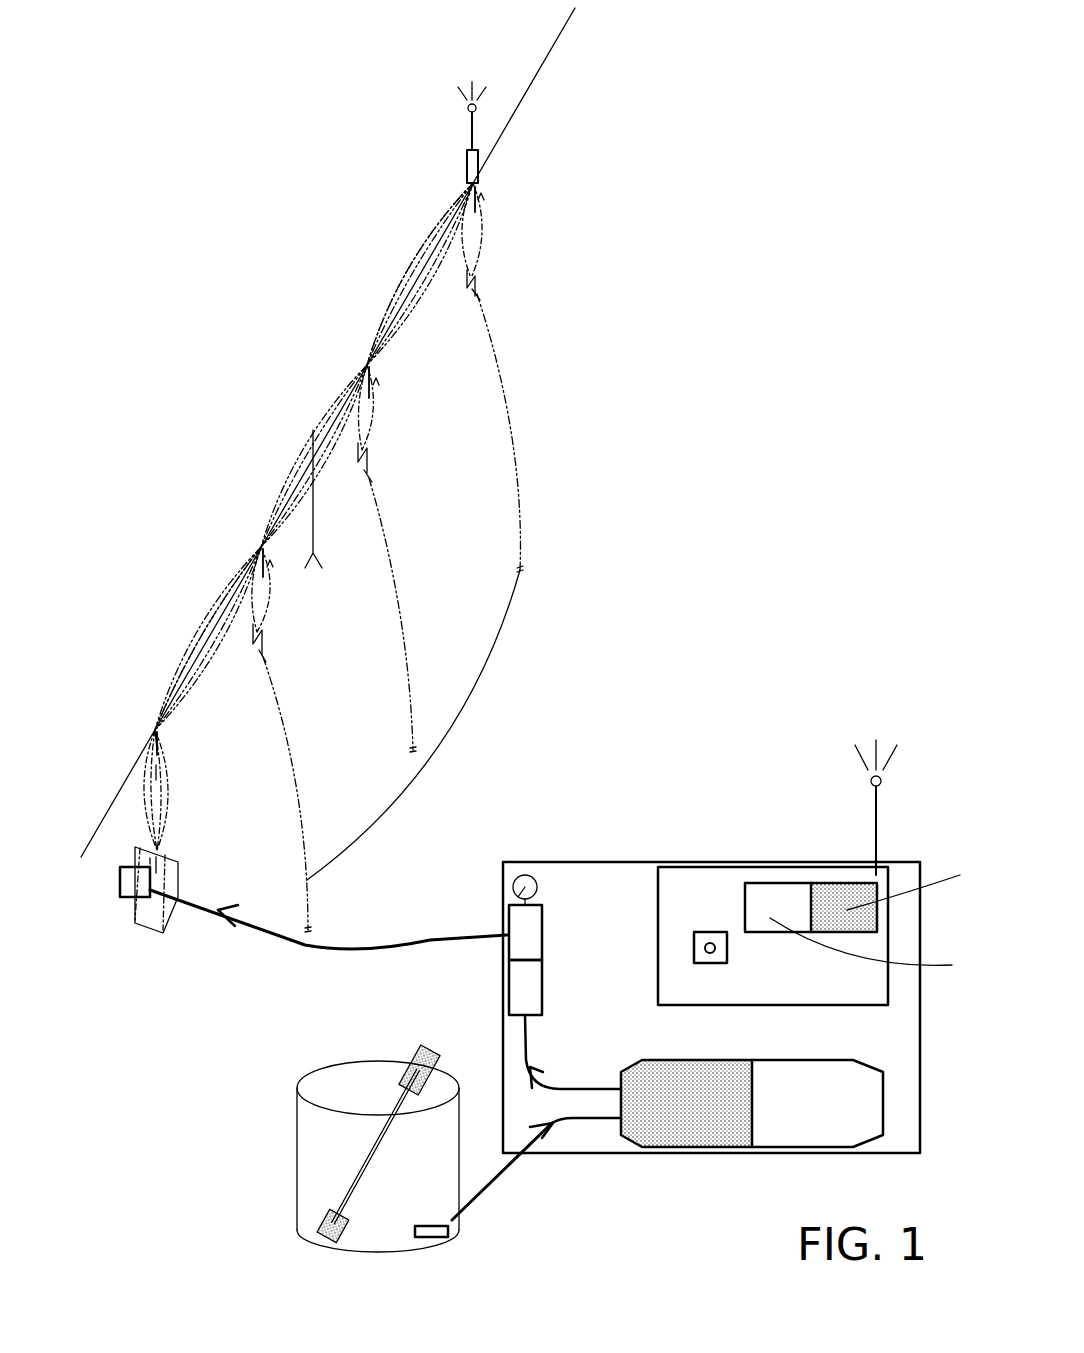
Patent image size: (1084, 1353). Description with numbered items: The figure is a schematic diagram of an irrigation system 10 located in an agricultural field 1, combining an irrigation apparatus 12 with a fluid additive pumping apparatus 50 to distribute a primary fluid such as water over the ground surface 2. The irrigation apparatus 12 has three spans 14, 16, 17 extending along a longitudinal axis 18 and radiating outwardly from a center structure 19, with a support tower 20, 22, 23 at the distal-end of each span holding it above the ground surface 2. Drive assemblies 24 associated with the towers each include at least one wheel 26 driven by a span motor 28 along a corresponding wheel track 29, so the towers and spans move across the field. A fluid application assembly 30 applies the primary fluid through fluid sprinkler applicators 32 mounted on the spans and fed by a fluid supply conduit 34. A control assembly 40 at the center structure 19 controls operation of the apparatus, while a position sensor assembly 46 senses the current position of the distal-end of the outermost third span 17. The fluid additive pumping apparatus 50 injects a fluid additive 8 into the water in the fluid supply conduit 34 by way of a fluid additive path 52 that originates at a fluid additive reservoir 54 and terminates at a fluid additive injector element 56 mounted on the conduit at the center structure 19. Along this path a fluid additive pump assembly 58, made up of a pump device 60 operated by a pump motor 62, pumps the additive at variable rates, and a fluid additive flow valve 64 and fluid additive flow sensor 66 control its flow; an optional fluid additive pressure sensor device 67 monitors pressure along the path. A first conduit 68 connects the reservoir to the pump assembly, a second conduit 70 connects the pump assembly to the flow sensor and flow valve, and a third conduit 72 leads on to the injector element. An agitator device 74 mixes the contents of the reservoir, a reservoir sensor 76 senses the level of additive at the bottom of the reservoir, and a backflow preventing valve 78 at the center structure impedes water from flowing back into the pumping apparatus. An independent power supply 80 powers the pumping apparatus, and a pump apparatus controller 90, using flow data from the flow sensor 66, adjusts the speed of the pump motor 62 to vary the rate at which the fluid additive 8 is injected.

The field 1 is at (635, 683).
The ground surface 2 is at (575, 420).
The fluid additive 8 is at (385, 1238).
The irrigation system 10 is at (557, 358).
The irrigation apparatus 12 is at (248, 357).
The span 14 is at (192, 653).
The span 16 is at (310, 453).
The outermost third span 17 is at (418, 272).
The longitudinal axis 18 is at (543, 62).
The center structure 19 is at (155, 733).
The support tower 20 is at (303, 599).
The support tower 22 is at (372, 426).
The support tower 23 is at (478, 246).
The drive assembly 24 is at (468, 283).
The wheel 26 is at (477, 291).
The span motor 28 is at (253, 630).
The wheel track 29 is at (410, 673).
The fluid application assembly 30 is at (340, 393).
The fluid sprinkler applicator 32 is at (315, 560).
The fluid supply conduit 34 is at (215, 603).
The control assembly 40 is at (138, 847).
The position sensor assembly 46 is at (478, 170).
The fluid additive pumping apparatus 50 is at (750, 845).
The fluid additive path 52 is at (265, 922).
The fluid additive reservoir 54 is at (297, 1155).
The fluid additive injector element 56 is at (178, 905).
The fluid additive pump assembly 58 is at (760, 1154).
The pump device 60 is at (707, 1092).
The pump motor 62 is at (862, 1120).
The fluid additive flow valve 64 is at (535, 988).
The fluid additive flow sensor 66 is at (532, 942).
The fluid additive pressure sensor device 67 is at (538, 887).
The first conduit 68 is at (470, 1202).
The second conduit 70 is at (593, 1087).
The third conduit 72 is at (405, 946).
The agitator device 74 is at (323, 1222).
The reservoir sensor 76 is at (432, 1240).
The backflow preventing valve 78 is at (130, 897).
The power supply 80 is at (695, 935).
The pump apparatus controller 90 is at (712, 907).